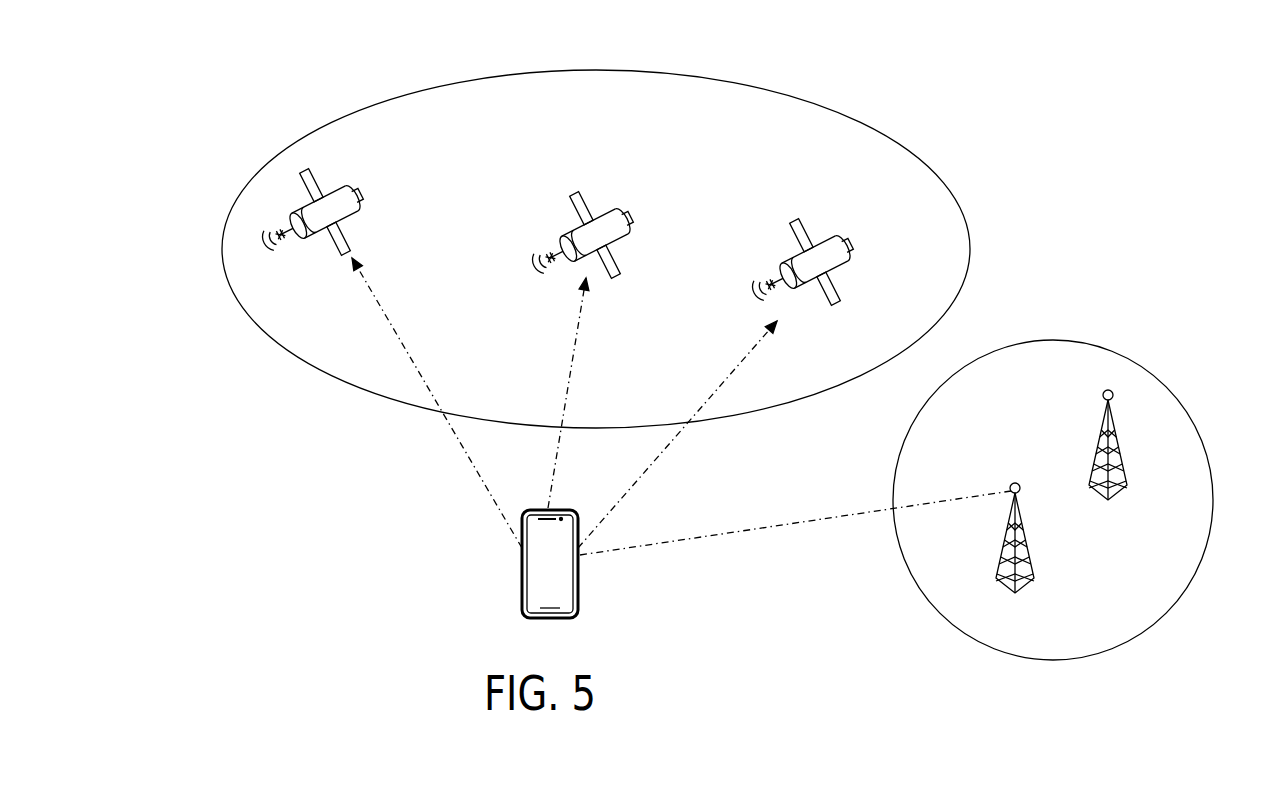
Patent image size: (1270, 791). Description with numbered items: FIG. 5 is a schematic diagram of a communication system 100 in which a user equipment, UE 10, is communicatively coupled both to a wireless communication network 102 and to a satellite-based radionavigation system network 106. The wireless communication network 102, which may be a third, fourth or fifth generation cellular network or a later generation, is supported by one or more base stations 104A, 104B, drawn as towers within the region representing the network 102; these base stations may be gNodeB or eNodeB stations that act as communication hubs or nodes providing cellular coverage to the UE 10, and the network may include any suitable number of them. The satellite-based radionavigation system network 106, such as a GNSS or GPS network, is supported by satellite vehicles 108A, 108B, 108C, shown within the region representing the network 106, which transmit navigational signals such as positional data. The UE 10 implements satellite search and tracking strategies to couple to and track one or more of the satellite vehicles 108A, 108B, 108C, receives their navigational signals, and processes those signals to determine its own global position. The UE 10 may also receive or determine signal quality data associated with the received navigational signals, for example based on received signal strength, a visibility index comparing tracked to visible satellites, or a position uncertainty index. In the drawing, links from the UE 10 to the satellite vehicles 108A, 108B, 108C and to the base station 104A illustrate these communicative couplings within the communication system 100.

The communication system 100 is at (1115, 48).
The satellite-based radionavigation system network 106 is at (975, 160).
The wireless communication network 102 is at (1195, 395).
The satellite vehicle 108A is at (356, 214).
The satellite vehicle 108B is at (612, 212).
The satellite vehicle 108C is at (832, 240).
The base station 104A is at (1028, 562).
The base station 104B is at (1120, 490).
The user equipment 10 is at (578, 580).